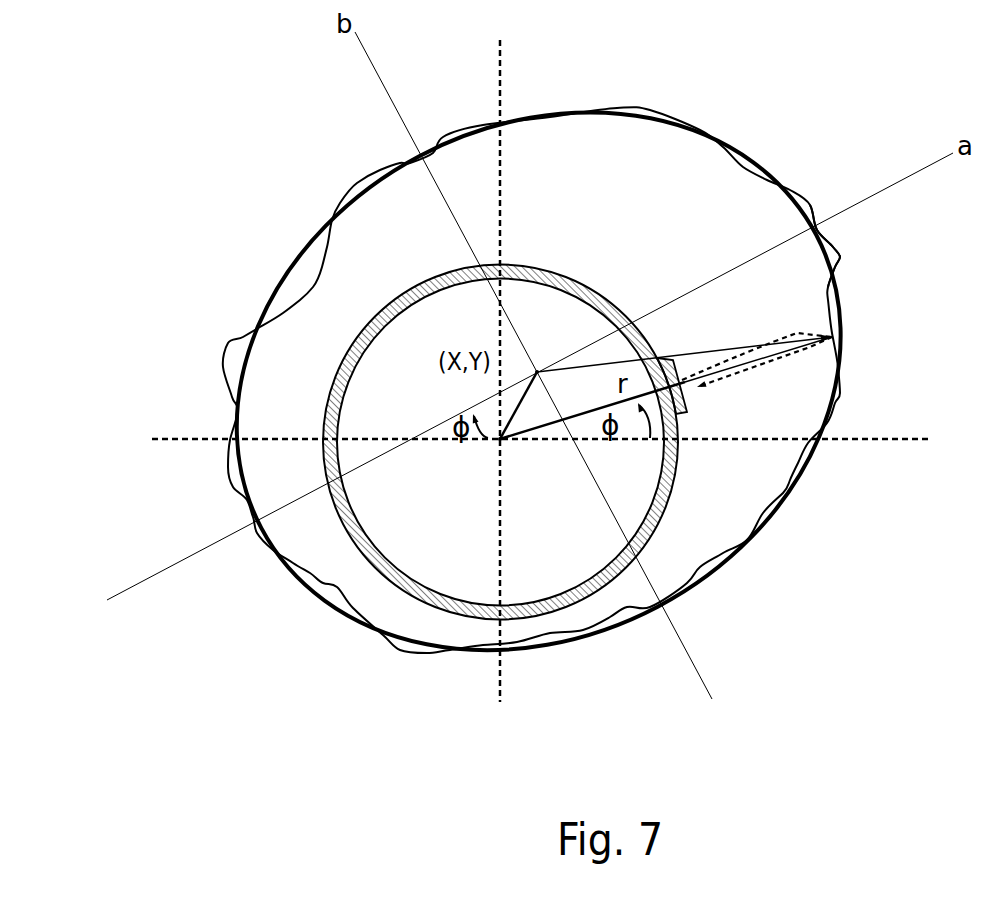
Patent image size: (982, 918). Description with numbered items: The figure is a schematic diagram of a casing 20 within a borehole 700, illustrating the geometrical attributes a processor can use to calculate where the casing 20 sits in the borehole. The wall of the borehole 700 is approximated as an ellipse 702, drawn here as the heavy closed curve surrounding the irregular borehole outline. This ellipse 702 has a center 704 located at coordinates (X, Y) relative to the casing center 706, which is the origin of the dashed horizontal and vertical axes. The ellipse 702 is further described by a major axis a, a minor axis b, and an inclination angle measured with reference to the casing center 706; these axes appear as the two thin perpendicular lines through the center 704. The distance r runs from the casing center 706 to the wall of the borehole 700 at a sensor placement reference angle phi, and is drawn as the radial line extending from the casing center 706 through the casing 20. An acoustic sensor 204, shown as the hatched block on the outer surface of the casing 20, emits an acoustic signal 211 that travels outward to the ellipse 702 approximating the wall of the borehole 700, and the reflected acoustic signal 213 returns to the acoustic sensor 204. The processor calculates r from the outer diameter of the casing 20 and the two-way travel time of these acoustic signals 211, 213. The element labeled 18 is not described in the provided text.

The food product 18 is at (830, 248).
The casing 20 is at (352, 342).
The acoustic sensor 204 is at (687, 413).
The acoustic signal 211 is at (800, 330).
The acoustic signal 213 is at (763, 368).
The borehole 700 is at (788, 190).
The ellipse 702 is at (742, 163).
The center 704 is at (537, 372).
The casing center 706 is at (498, 441).